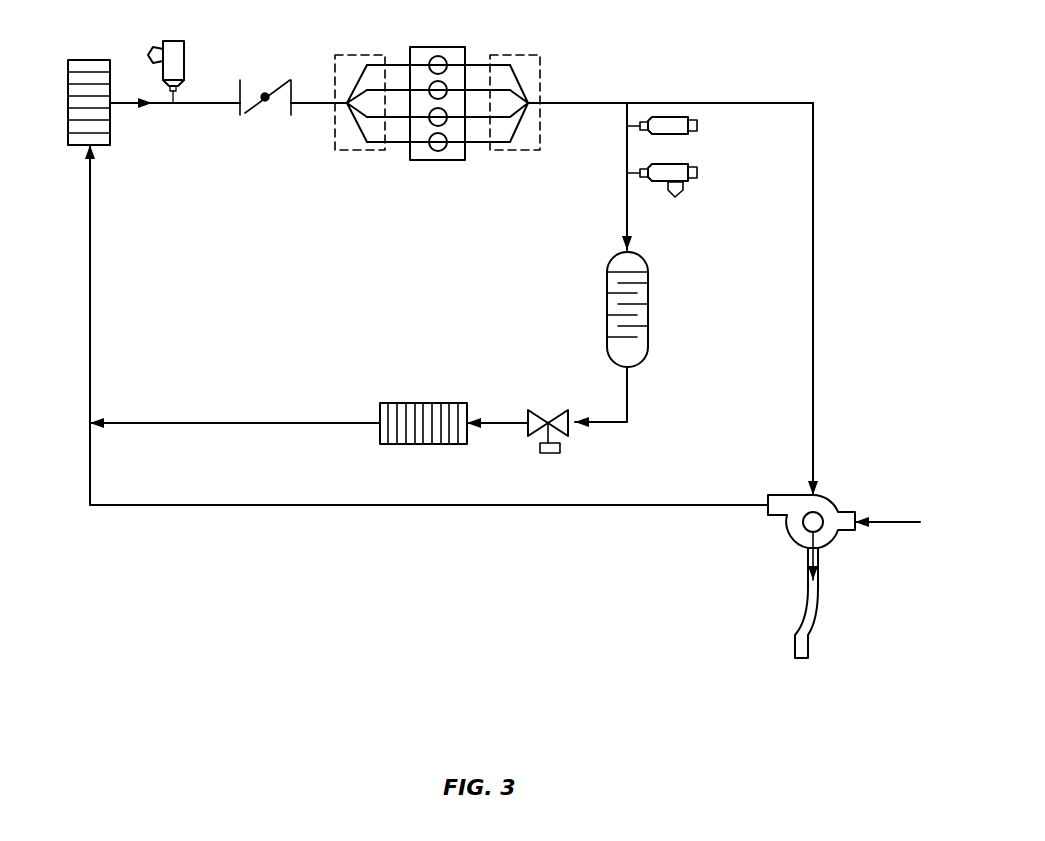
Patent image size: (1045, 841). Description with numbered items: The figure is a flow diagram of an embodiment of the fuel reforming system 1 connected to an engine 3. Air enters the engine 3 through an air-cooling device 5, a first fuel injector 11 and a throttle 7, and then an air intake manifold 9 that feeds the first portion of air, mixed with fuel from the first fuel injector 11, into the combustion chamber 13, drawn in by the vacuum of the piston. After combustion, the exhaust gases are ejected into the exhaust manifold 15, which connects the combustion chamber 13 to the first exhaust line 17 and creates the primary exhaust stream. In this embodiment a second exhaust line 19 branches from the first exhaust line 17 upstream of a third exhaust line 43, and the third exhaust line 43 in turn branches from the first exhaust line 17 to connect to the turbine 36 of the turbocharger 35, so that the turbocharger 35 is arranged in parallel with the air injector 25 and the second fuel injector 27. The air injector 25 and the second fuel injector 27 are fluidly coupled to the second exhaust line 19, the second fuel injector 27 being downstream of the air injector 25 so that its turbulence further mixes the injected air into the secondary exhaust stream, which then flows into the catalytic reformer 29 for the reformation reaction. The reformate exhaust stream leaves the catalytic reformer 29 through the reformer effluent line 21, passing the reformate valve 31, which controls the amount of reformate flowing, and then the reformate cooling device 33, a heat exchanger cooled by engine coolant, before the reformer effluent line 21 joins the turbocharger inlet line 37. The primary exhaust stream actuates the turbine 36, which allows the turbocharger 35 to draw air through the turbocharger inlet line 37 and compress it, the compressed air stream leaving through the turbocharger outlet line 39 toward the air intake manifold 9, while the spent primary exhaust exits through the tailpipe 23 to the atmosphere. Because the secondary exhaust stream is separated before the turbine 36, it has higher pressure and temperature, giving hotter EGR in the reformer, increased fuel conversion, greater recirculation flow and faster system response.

The fuel reforming system 1 is at (890, 88).
The engine 3 is at (438, 113).
The air-cooling device 5 is at (90, 60).
The throttle 7 is at (266, 115).
The air intake manifold 9 is at (363, 55).
The first fuel injector 11 is at (172, 41).
The combustion chamber 13 is at (438, 150).
The exhaust manifold 15 is at (518, 55).
The first exhaust line 17 is at (711, 103).
The second exhaust line 19 is at (628, 210).
The reformer effluent line 21 is at (252, 423).
The tailpipe 23 is at (800, 612).
The air injector 25 is at (698, 126).
The second fuel injector 27 is at (698, 173).
The catalytic reformer 29 is at (648, 303).
The reformate valve 31 is at (552, 455).
The reformate cooling device 33 is at (430, 445).
The turbocharger 35 is at (810, 523).
The turbine 36 is at (820, 530).
The turbocharger inlet line 37 is at (885, 520).
The turbocharger outlet line 39 is at (90, 473).
The third exhaust line 43 is at (815, 282).